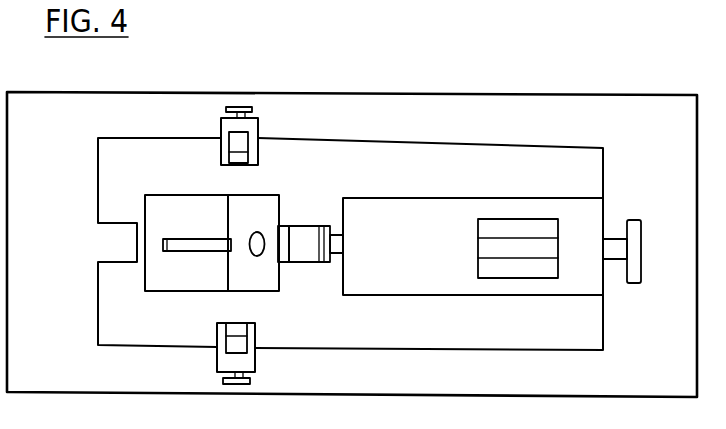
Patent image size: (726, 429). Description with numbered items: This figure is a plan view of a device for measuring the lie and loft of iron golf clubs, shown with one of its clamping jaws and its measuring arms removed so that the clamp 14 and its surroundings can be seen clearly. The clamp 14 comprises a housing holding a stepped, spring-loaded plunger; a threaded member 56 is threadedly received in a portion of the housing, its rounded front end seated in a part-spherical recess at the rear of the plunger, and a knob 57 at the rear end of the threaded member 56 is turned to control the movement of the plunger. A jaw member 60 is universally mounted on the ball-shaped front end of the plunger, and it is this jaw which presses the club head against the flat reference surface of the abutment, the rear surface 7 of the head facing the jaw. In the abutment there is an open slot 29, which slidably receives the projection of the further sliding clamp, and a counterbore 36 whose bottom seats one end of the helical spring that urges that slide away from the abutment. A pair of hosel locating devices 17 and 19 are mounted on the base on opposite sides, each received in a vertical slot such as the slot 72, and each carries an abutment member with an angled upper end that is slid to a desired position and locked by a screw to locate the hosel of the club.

The clamp 14 is at (313, 200).
The hosel locating device 19 is at (264, 137).
The vertical slot 72 is at (258, 153).
The open slot 29 is at (195, 240).
The counterbore 36 is at (252, 247).
The jaw member 60 is at (294, 266).
The threaded member 56 is at (525, 252).
The knob 57 is at (641, 233).
The rear surface 7 is at (217, 333).
The hosel locating device 17 is at (244, 350).